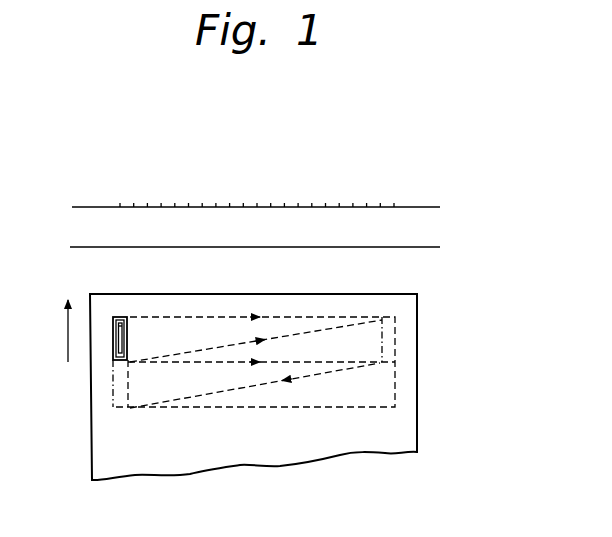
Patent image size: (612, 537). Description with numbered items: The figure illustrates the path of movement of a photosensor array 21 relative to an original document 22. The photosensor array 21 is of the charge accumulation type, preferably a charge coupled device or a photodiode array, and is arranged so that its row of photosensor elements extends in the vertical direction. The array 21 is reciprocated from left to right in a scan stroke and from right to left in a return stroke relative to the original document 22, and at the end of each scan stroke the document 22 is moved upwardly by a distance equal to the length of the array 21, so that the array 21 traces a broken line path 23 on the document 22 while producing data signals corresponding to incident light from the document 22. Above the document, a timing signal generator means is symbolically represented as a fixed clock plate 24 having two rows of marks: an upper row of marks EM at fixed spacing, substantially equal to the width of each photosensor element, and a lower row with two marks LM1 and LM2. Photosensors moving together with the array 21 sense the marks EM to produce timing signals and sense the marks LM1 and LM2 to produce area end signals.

The photosensor array 21 is at (114, 342).
The original document 22 is at (422, 348).
The broken line path 23 is at (313, 316).
The fixed clock plate 24 is at (462, 221).
The marks EM is at (215, 203).
The mark LM1 is at (158, 245).
The mark LM2 is at (359, 245).